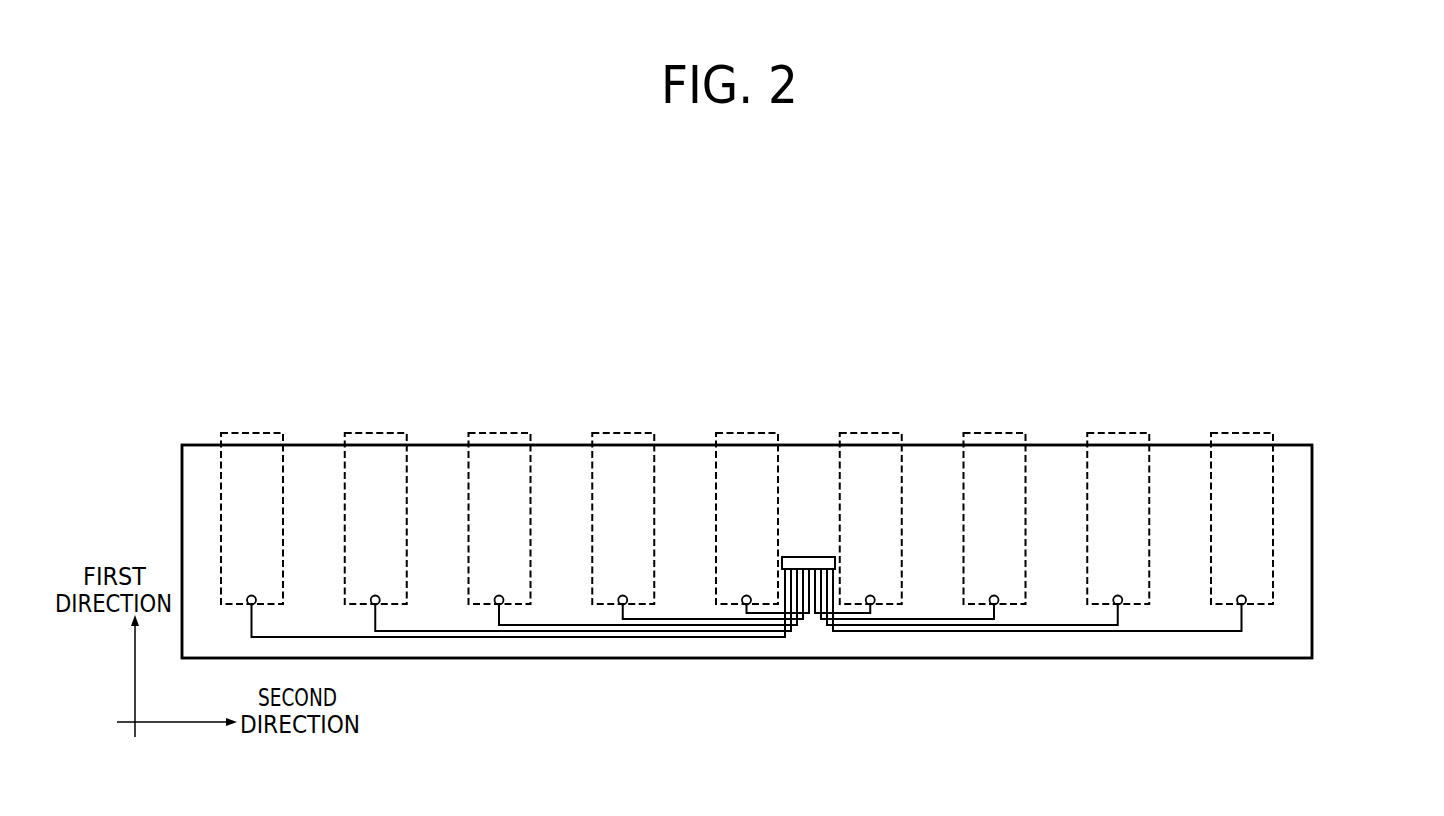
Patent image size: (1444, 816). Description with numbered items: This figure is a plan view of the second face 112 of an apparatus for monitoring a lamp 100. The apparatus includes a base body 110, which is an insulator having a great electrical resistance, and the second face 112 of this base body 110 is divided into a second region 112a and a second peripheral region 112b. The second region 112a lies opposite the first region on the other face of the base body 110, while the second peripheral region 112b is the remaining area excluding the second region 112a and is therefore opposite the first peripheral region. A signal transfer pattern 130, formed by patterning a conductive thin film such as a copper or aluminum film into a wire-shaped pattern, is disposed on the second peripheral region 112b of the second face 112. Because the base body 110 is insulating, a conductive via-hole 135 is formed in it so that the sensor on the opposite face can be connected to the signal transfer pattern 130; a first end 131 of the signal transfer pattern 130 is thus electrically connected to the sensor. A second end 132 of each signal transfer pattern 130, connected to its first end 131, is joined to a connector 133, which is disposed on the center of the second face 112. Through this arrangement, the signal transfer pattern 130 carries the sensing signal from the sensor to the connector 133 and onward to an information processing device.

The apparatus for monitoring a lamp 100 is at (660, 398).
The base body 110 is at (1330, 650).
The second face 112 is at (1293, 450).
The second region 112a is at (250, 432).
The second peripheral region 112b is at (440, 492).
The signal transfer pattern 130 is at (784, 645).
The first end 131 is at (1244, 606).
The second end 132 is at (838, 570).
The connector 133 is at (790, 557).
The conductive via-hole 135 is at (1246, 597).